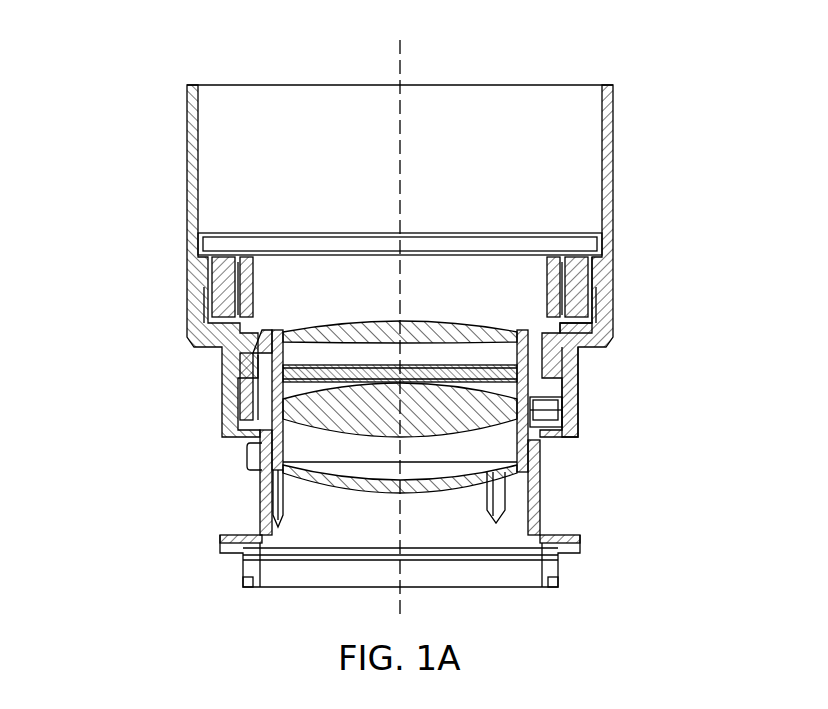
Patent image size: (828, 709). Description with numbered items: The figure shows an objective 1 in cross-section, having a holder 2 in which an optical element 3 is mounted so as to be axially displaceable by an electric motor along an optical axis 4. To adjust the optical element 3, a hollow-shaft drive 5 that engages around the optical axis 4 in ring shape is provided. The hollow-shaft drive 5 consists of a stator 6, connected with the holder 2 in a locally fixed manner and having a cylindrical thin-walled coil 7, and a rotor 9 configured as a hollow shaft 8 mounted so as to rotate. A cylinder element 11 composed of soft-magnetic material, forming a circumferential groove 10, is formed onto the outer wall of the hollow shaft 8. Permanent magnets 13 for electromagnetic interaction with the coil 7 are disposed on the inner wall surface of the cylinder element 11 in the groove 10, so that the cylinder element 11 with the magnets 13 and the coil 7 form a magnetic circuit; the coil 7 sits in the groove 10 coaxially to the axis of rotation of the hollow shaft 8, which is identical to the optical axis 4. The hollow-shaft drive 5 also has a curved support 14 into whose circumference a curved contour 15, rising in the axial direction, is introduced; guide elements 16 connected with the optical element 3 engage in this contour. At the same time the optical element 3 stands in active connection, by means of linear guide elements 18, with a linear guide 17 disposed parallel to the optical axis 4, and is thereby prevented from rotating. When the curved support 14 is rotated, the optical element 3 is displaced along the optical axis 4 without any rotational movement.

The objective 1 is at (146, 98).
The holder 2 is at (607, 120).
The optical element 3 is at (512, 449).
The optical axis 4 is at (405, 600).
The hollow-shaft drive 5 is at (151, 264).
The stator 6 is at (572, 257).
The coil 7 is at (250, 257).
The hollow shaft 8 is at (548, 305).
The rotor 9 is at (585, 338).
The circumferential groove 10 is at (228, 208).
The cylinder element 11 is at (585, 320).
The permanent magnets 13 is at (602, 268).
The curved support 14 is at (578, 375).
The curved contour 15 is at (250, 355).
The guide elements 16 is at (243, 402).
The linear guide 17 is at (505, 490).
The linear guide elements 18 is at (247, 455).